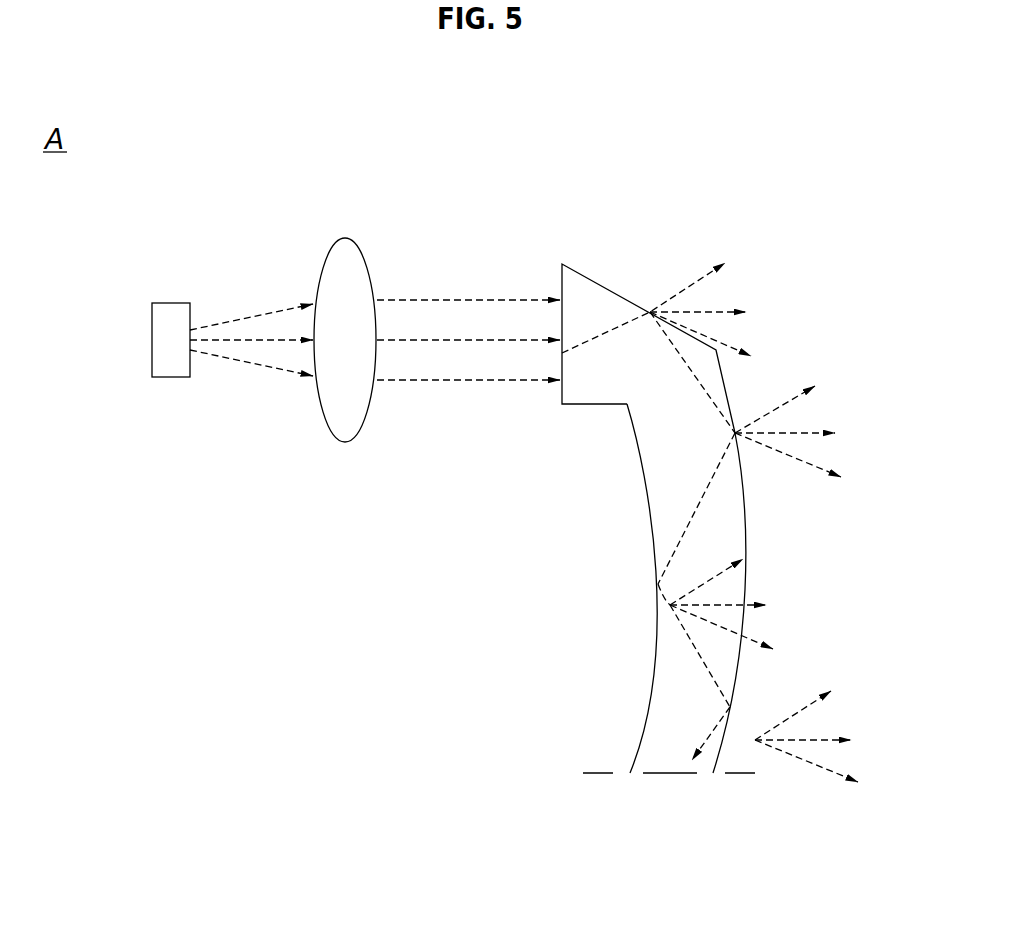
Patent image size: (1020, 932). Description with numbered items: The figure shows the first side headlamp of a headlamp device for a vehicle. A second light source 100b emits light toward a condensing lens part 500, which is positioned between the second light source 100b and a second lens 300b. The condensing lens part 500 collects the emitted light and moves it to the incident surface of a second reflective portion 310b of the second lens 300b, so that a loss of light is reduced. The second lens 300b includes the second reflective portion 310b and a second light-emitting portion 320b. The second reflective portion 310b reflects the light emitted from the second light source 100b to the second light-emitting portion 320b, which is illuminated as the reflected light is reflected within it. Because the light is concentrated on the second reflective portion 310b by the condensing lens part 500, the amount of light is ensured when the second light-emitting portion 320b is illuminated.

The second light source 100b is at (172, 292).
The condensing lens part 500 is at (345, 250).
The second lens 300b is at (714, 487).
The second reflective portion 310b is at (590, 382).
The second light-emitting portion 320b is at (727, 663).